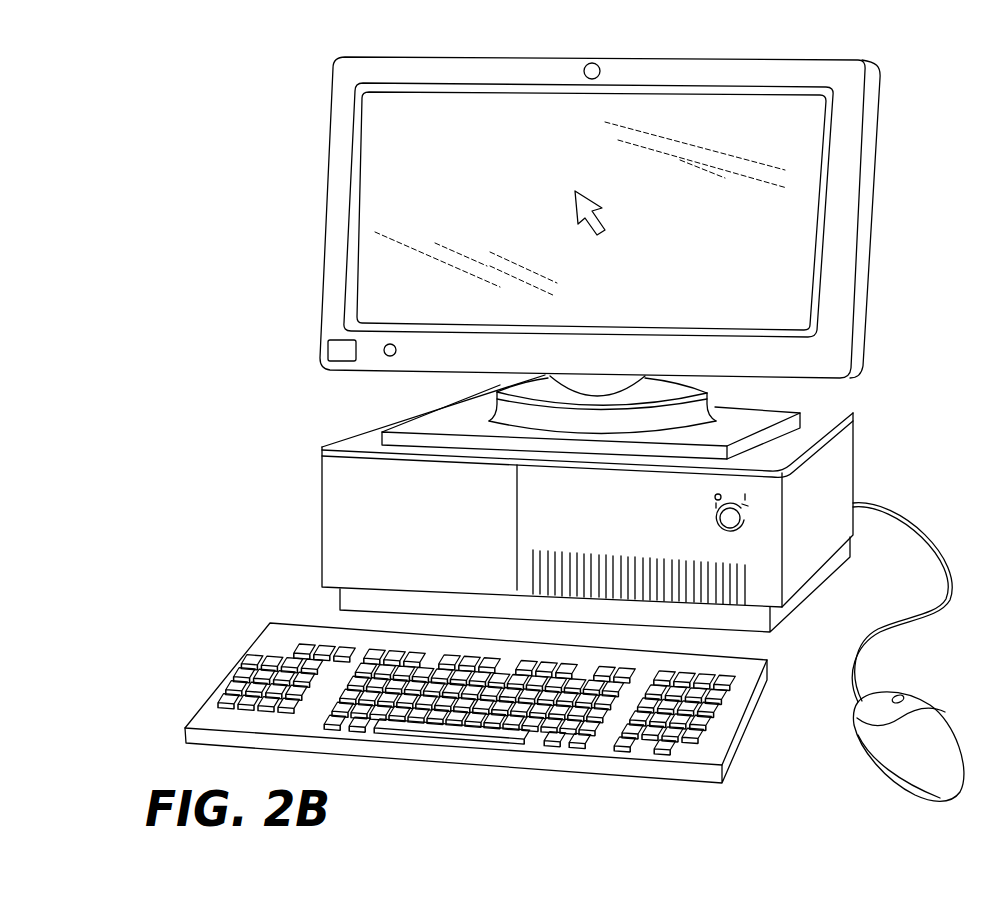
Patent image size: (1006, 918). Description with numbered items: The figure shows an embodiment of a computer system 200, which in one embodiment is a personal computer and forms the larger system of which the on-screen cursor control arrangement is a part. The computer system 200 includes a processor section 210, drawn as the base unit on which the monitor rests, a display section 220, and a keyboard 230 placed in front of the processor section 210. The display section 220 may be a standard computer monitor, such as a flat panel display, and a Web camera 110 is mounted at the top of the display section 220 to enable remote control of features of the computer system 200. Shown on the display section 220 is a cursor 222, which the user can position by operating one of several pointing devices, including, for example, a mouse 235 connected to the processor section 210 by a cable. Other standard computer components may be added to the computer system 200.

The camera 110 is at (592, 63).
The computer system 200 is at (244, 174).
The processor section 210 is at (765, 510).
The display section 220 is at (846, 228).
The cursor 222 is at (597, 216).
The keyboard 230 is at (752, 673).
The mouse 235 is at (935, 730).